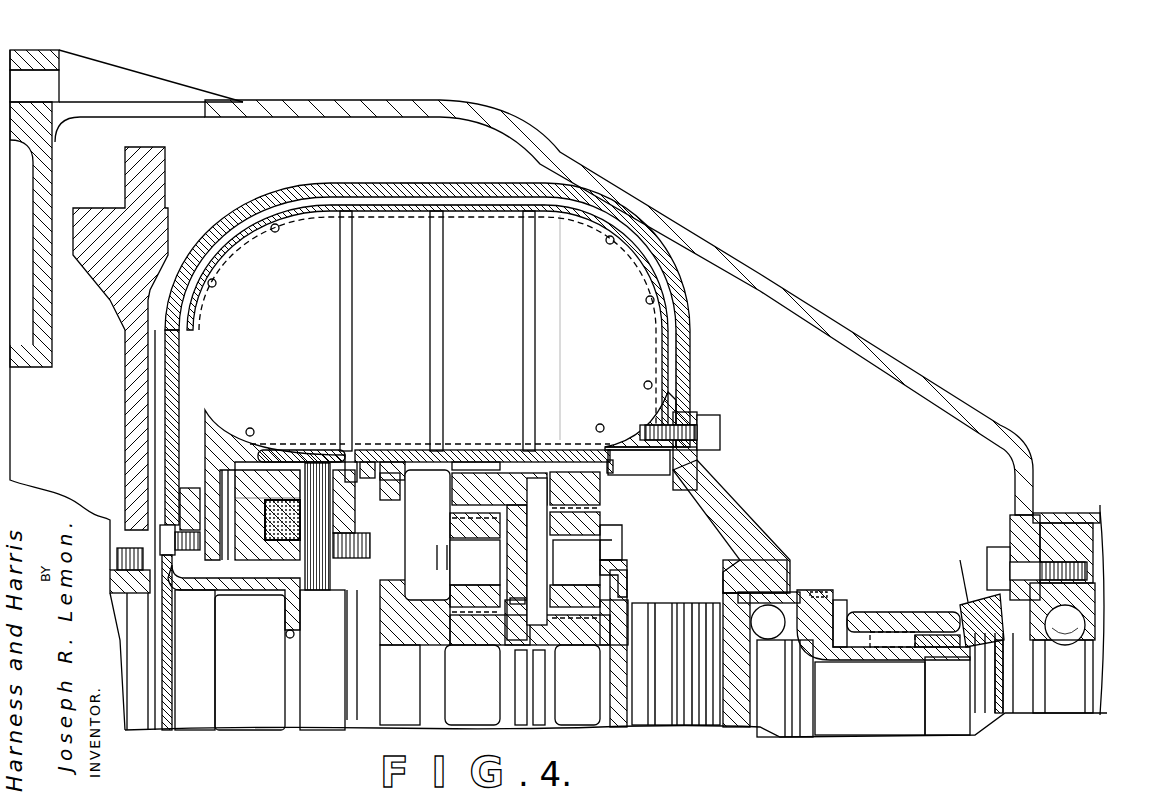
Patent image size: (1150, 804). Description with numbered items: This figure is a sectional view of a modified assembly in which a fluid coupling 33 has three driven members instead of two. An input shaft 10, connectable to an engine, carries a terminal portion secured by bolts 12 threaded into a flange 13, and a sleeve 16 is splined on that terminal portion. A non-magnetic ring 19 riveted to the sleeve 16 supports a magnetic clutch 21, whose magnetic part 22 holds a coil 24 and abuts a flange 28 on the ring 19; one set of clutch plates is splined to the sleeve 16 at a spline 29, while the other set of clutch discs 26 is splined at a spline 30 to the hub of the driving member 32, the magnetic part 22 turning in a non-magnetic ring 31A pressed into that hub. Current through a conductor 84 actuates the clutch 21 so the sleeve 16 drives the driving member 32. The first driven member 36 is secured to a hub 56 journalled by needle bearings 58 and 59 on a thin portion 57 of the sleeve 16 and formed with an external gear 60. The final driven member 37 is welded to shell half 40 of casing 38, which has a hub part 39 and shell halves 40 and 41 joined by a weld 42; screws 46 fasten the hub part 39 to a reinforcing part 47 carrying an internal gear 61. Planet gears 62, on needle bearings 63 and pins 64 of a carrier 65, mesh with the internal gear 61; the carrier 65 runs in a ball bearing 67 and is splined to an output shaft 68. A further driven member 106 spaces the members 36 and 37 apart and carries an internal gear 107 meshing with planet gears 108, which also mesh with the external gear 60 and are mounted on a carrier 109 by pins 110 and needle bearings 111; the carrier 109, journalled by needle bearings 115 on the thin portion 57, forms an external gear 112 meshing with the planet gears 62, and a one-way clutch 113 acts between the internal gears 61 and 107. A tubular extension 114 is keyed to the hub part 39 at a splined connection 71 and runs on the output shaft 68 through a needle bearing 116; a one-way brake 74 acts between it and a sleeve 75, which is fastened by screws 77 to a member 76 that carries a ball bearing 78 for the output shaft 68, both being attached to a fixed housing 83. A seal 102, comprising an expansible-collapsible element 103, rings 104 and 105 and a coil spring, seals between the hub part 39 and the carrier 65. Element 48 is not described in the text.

The input shaft 10 is at (118, 584).
The bolts 12 is at (115, 540).
The flange 13 is at (118, 520).
The sleeve 16 is at (338, 656).
The ring 19 is at (261, 518).
The magnetic clutch 21 is at (385, 450).
The magnetic part 22 is at (290, 493).
The coil 24 is at (282, 520).
The set of clutch discs 26 is at (318, 462).
The flange 28 is at (351, 514).
The spline 29 is at (234, 600).
The spline 30 is at (360, 475).
The non-magnetic ring 31A is at (275, 449).
The driving member 32 is at (292, 330).
The fluid coupling 33 is at (380, 182).
The driven member 36 is at (402, 336).
The driven member 37 is at (604, 336).
The casing 38 is at (673, 287).
The hub part 39 is at (735, 500).
The shell half 40 is at (684, 333).
The shell half 41 is at (238, 215).
The weld 42 is at (410, 184).
The screws 46 is at (720, 432).
The reinforcing part 47 is at (625, 455).
The block 48 is at (262, 664).
The hub 56 is at (400, 588).
The thin portion 57 is at (440, 692).
The needle bearing 58 is at (400, 685).
The needle bearing 59 is at (478, 670).
The external gear 60 is at (455, 611).
The internal gear 61 is at (605, 495).
The planet gear 62 is at (605, 520).
The needle bearing 63 is at (575, 579).
The pin 64 is at (624, 552).
The carrier 65 is at (628, 590).
The ball bearing 67 is at (790, 575).
The output shaft 68 is at (888, 694).
The splined connection 71 is at (843, 590).
The one-way brake 74 is at (935, 633).
The sleeve 75 is at (890, 612).
The member 76 is at (1058, 520).
The screws 77 is at (996, 552).
The ball bearing 78 is at (1090, 612).
The fixed housing 83 is at (1000, 450).
The conductor 84 is at (960, 565).
The seal 102 is at (689, 734).
The expansible-collapsible element 103 is at (688, 606).
The ring 104 is at (676, 604).
The ring 105 is at (660, 604).
The driven member 106 is at (492, 346).
The internal gear 107 is at (458, 488).
The planet gears 108 is at (450, 533).
The carrier 109 is at (527, 645).
The pins 110 is at (525, 548).
The needle bearings 111 is at (492, 571).
The external gear 112 is at (545, 620).
The one-way clutch 113 is at (528, 480).
The tubular extension 114 is at (840, 622).
The needle bearings 115 is at (575, 712).
The needle bearing 116 is at (955, 692).